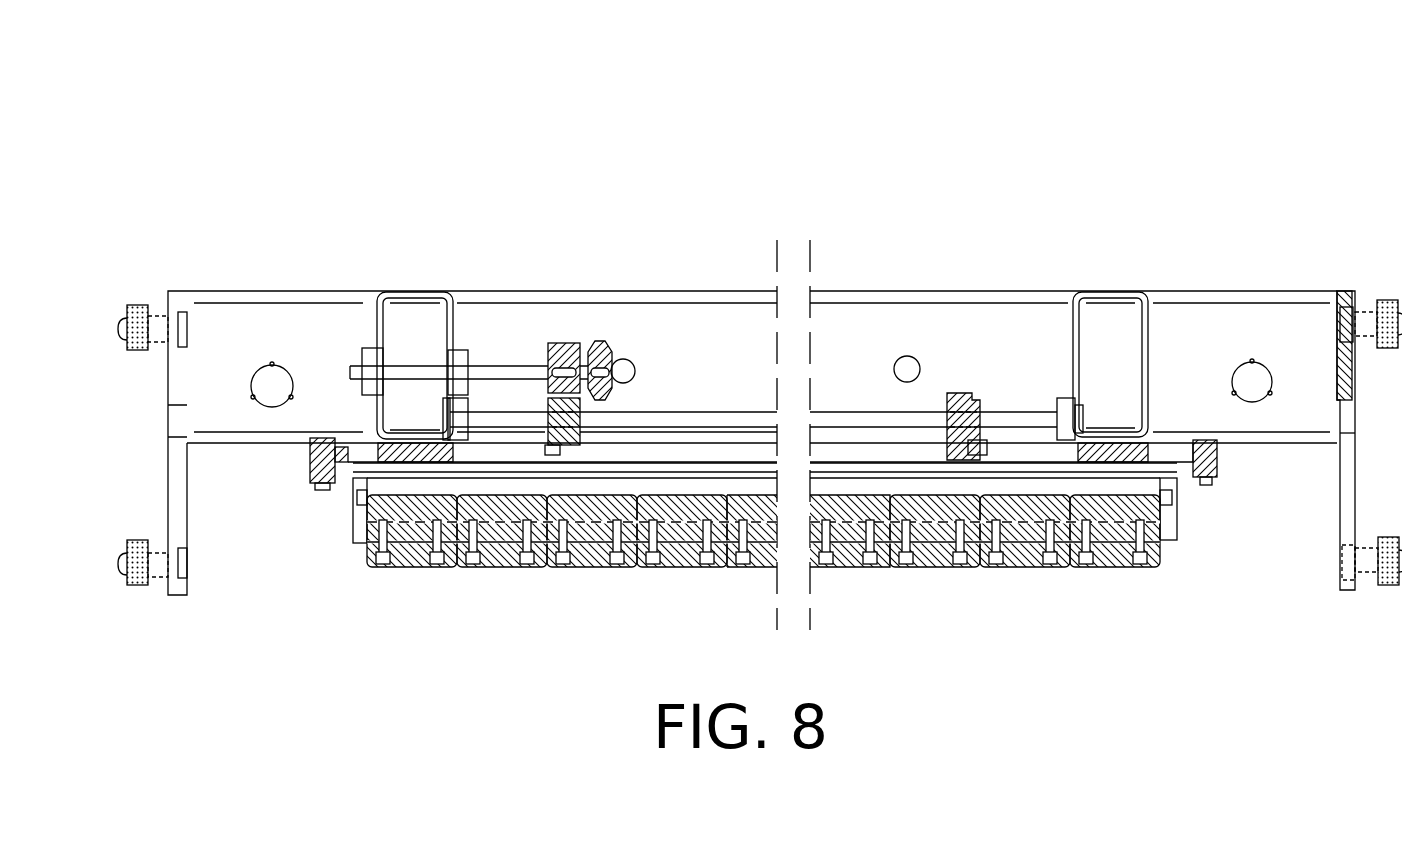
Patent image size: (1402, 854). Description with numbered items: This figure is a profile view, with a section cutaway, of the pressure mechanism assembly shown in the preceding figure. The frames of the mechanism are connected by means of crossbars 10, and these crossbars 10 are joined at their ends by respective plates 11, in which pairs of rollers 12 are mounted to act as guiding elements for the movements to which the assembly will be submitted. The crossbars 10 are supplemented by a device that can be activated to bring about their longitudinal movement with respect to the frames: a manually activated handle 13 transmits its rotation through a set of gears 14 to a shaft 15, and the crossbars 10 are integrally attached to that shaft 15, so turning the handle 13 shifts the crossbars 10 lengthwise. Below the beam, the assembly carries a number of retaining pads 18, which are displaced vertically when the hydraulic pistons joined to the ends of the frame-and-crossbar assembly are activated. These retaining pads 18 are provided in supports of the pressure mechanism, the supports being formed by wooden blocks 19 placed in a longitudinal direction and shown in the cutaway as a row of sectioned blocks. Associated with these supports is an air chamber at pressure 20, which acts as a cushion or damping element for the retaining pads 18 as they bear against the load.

The crossbar 10 is at (455, 330).
The plate 11 is at (180, 498).
The roller 12 is at (140, 320).
The handle 13 is at (628, 363).
The set of gears 14 is at (572, 408).
The shaft 15 is at (912, 418).
The retaining pad 18 is at (1113, 548).
The wooden block 19 is at (413, 545).
The air chamber at pressure 20 is at (1133, 483).